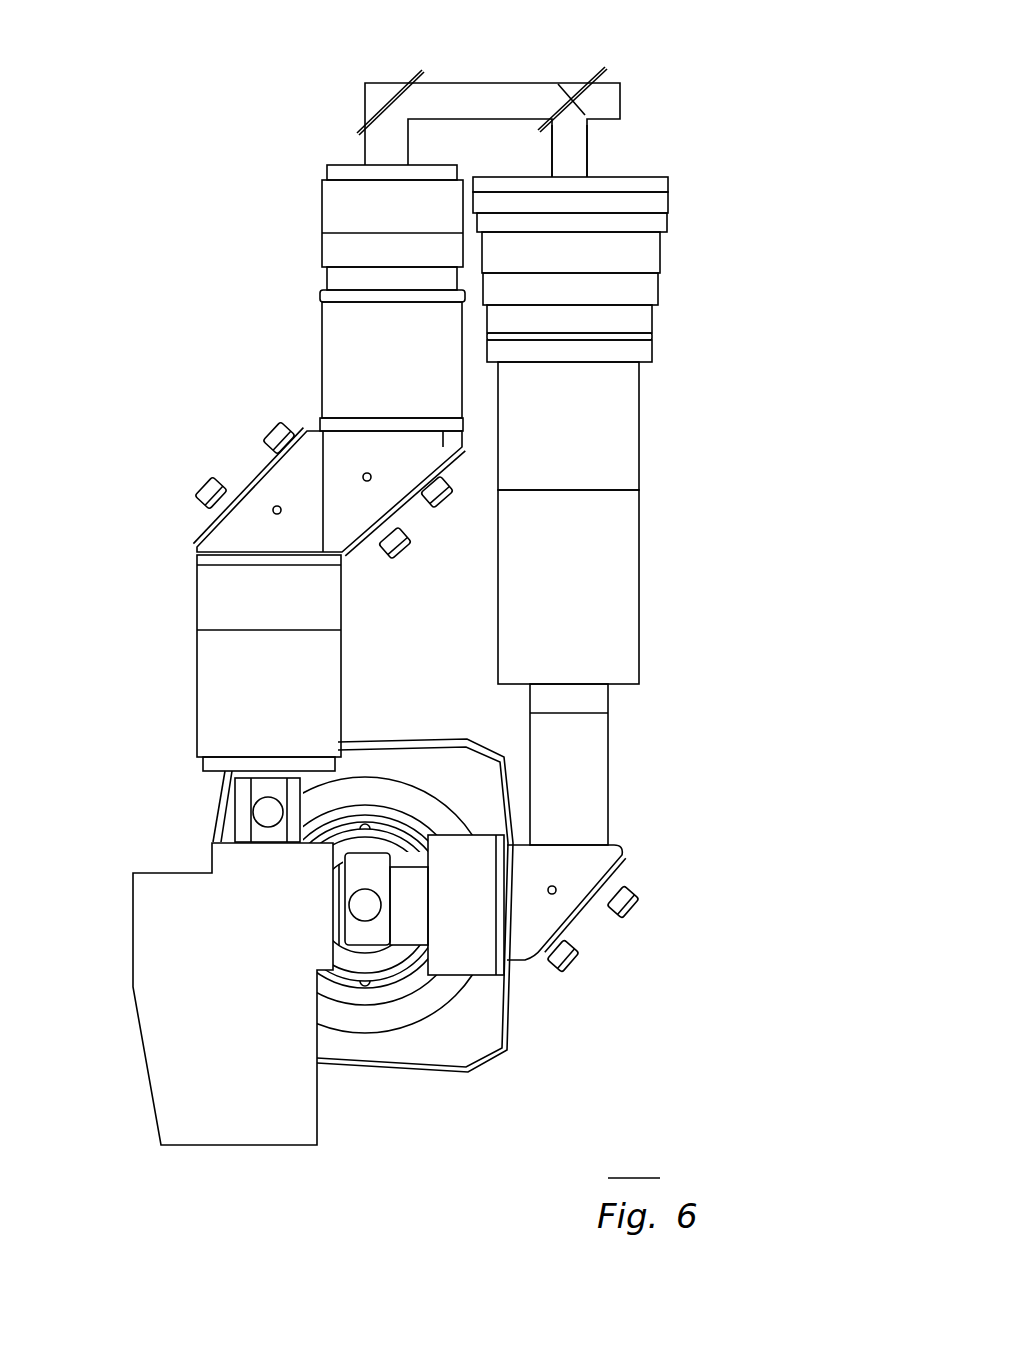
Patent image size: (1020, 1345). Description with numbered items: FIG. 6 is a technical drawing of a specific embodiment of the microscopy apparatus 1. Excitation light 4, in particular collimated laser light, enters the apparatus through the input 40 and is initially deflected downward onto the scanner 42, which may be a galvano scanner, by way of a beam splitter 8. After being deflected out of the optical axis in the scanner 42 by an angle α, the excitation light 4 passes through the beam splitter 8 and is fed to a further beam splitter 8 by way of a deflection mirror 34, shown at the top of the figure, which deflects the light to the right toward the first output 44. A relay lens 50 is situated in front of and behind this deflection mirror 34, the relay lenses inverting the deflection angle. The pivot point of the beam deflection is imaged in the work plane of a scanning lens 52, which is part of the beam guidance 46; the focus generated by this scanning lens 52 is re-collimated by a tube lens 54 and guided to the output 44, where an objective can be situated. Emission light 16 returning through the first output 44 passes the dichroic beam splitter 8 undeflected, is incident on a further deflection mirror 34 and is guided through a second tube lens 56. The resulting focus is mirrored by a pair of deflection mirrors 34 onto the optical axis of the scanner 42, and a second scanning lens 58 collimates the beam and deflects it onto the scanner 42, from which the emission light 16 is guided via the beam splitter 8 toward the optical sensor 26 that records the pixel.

The microscopy apparatus 1 is at (187, 370).
The excitation light 4 is at (568, 156).
The beam splitter 8 is at (575, 92).
The emission light 16 is at (445, 100).
The optical sensor 26 is at (487, 1025).
The deflection mirror 34 is at (383, 112).
The input 40 is at (267, 813).
The scanner 42 is at (243, 1100).
The first output 44 is at (625, 100).
The beam guidance 46 is at (605, 575).
The relay lens 50 is at (592, 698).
The scanning lens 52 is at (627, 468).
The tube lens 54 is at (628, 267).
The second tube lens 56 is at (342, 203).
The second scanning lens 58 is at (207, 593).